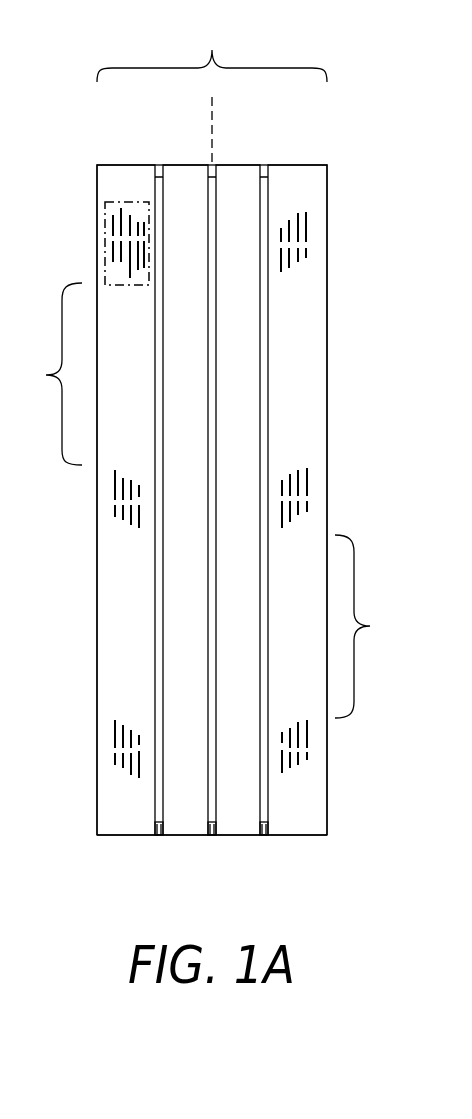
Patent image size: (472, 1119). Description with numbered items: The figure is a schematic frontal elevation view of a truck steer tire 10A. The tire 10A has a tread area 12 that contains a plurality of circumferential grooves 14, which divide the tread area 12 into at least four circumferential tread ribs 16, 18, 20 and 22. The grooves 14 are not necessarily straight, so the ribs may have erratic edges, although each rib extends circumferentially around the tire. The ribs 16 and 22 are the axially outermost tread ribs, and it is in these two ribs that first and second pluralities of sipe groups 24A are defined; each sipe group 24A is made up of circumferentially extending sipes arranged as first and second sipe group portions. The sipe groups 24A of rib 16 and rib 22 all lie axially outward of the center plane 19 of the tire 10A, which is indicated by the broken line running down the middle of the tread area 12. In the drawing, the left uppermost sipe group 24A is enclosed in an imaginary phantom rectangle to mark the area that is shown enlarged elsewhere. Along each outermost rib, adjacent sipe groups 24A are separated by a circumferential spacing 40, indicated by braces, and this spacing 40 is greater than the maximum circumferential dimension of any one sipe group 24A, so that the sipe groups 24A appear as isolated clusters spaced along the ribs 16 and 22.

The truck steer tire 10A is at (355, 99).
The tread area 12 is at (212, 48).
The circumferential grooves 14 is at (272, 873).
The tread rib 16 is at (108, 172).
The tread rib 18 is at (195, 166).
The center plane 19 is at (212, 108).
The tread rib 20 is at (240, 166).
The tread rib 22 is at (313, 173).
The sipe groups 24A is at (110, 201).
The circumferential spacing 40 is at (209, 500).